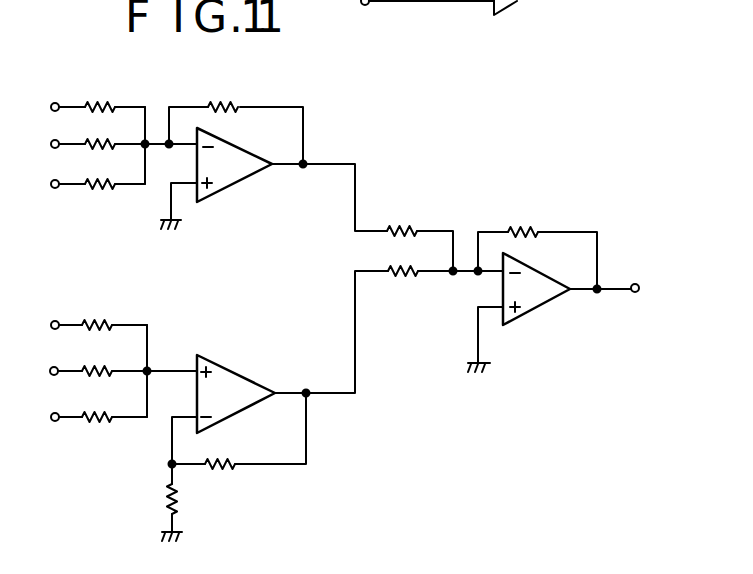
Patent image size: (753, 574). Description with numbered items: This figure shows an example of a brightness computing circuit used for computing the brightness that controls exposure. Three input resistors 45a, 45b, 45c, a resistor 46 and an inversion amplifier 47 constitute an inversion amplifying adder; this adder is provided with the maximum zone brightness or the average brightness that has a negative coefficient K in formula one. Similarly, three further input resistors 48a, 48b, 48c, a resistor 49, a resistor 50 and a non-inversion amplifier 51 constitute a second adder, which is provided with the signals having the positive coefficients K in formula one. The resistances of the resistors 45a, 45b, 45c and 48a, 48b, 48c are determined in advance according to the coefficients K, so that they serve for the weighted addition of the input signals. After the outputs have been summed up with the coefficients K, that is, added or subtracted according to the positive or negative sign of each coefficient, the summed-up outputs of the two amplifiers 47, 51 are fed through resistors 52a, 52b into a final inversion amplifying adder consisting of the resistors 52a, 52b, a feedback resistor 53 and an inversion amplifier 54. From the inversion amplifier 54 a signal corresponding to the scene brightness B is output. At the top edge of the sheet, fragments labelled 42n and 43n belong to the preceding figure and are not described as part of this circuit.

The amplifier (fragment of preceding figure) 42n is at (523, 4).
The resistor (fragment of preceding figure) 43n is at (608, 0).
The resistor 45a is at (103, 100).
The resistor 45b is at (116, 140).
The resistor 45c is at (108, 190).
The resistor 46 is at (228, 100).
The inversion amplifier 47 is at (243, 177).
The resistor 48a is at (103, 321).
The resistor 48b is at (107, 370).
The resistor 48c is at (104, 426).
The resistor 49 is at (220, 466).
The resistor 50 is at (168, 490).
The non-inversion amplifier 51 is at (245, 377).
The resistor 52a is at (405, 228).
The resistor 52b is at (408, 280).
The resistor 53 is at (530, 229).
The inversion amplifier 54 is at (540, 310).